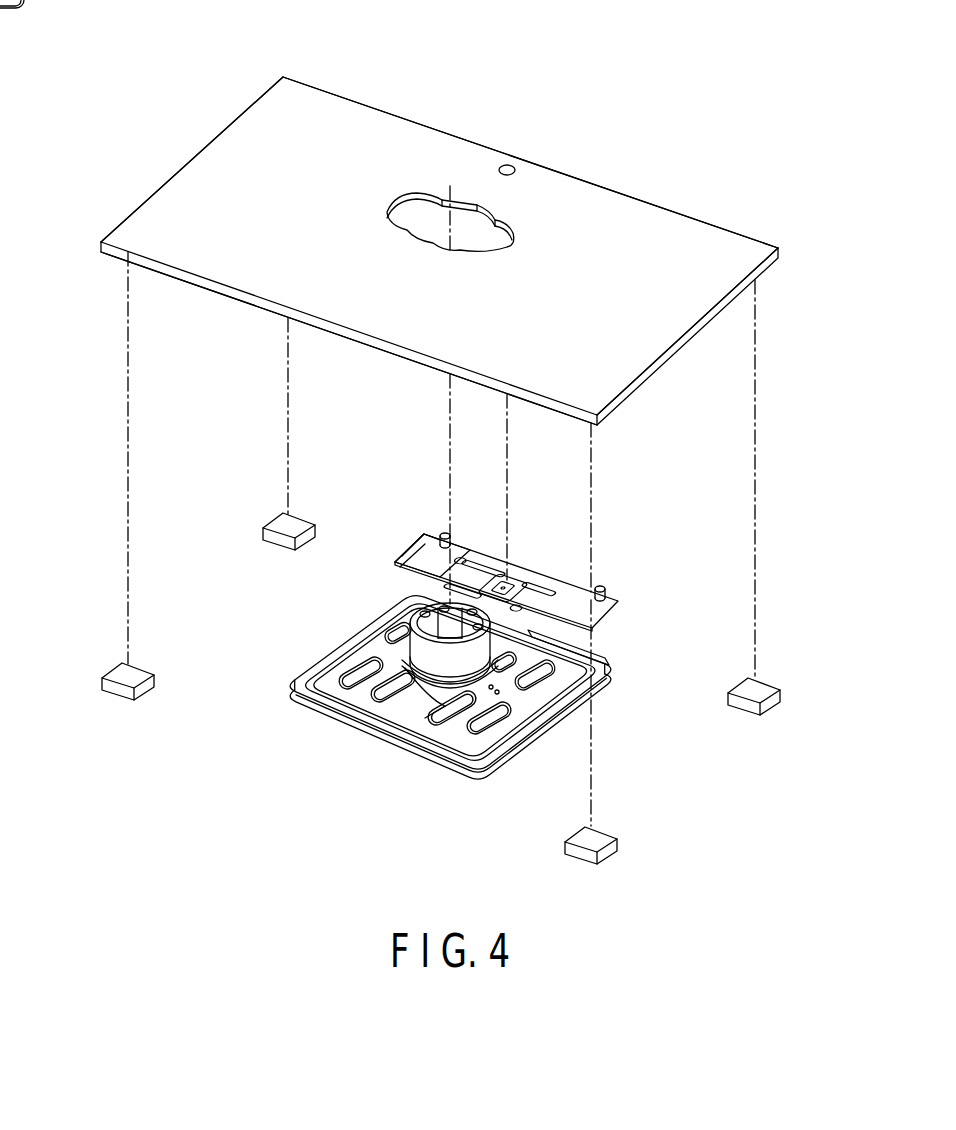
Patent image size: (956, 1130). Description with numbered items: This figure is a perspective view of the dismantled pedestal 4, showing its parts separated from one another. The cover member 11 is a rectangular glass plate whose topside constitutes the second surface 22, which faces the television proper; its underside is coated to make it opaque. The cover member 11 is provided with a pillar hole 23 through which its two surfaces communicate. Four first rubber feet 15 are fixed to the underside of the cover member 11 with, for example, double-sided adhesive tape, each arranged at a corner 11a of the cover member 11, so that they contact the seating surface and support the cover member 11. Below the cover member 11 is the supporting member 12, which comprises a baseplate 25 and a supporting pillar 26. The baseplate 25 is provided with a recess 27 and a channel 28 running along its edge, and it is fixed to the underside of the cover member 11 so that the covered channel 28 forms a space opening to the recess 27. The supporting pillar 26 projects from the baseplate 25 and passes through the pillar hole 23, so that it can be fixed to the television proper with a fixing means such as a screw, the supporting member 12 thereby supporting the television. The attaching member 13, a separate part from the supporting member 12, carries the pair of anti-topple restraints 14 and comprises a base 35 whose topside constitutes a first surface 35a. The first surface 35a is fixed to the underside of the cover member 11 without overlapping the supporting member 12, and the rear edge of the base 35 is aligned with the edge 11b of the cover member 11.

The pedestal 4 is at (160, 118).
The cover member 11 is at (372, 122).
The corner of the cover member 11a is at (283, 75).
The edge of the cover member 11b is at (376, 350).
The second surface 22 is at (660, 228).
The pillar hole 23 is at (463, 198).
The supporting member 12 is at (364, 728).
The attaching member 13 is at (606, 612).
The anti-topple restraints 14 is at (440, 534).
The first rubber feet 15 is at (272, 550).
The baseplate 25 is at (446, 738).
The supporting pillar 26 is at (420, 648).
The recess 27 is at (522, 584).
The channel 28 is at (578, 642).
The base 35 is at (418, 560).
The first surface 35a is at (420, 548).